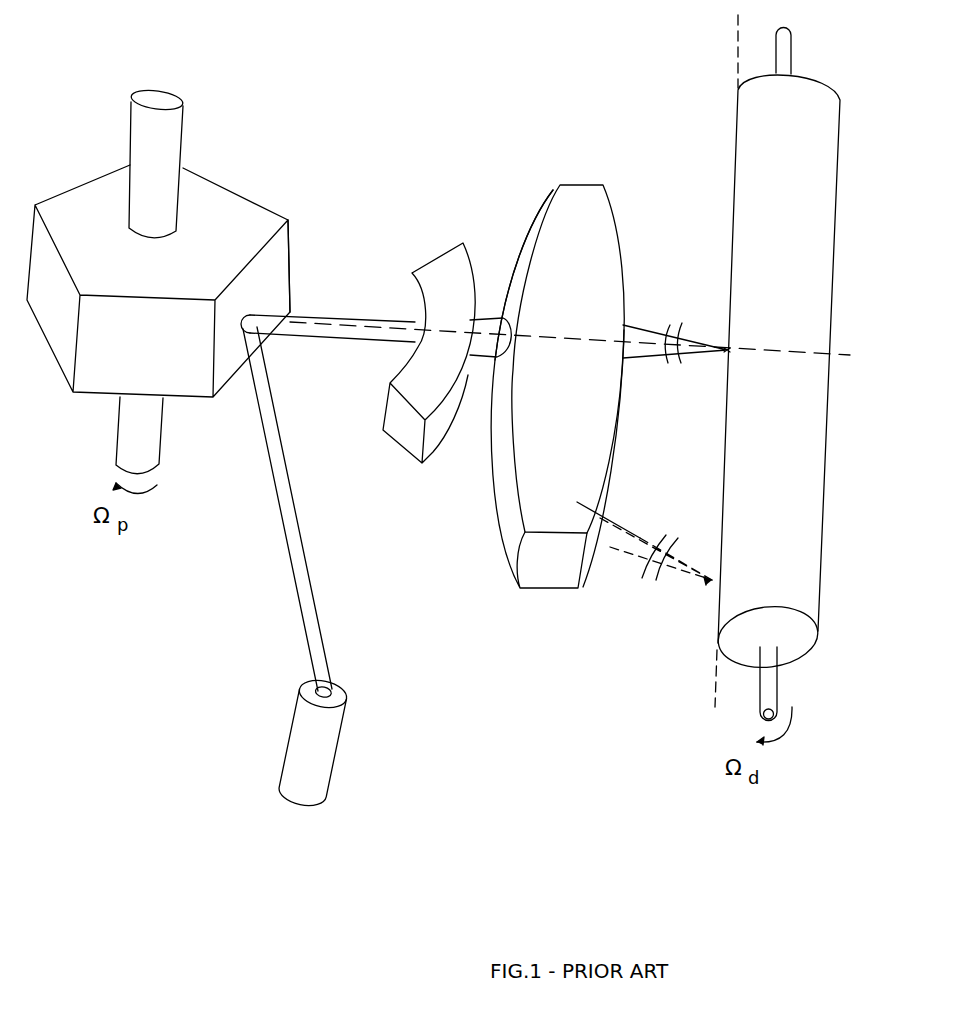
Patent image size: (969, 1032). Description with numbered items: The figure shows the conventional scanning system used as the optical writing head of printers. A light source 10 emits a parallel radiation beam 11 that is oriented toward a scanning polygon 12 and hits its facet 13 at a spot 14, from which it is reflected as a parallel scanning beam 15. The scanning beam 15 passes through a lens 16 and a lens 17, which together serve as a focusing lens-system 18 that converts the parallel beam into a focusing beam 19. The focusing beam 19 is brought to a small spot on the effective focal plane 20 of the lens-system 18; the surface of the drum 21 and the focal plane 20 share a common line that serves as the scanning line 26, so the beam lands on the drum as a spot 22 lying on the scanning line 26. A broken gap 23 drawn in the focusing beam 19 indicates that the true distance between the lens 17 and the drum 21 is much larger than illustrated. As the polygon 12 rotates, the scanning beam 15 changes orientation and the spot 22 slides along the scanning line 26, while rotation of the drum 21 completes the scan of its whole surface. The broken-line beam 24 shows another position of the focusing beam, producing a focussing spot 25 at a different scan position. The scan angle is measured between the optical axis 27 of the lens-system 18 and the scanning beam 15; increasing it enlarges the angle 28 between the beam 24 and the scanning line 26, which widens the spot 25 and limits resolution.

The light source 10 is at (317, 720).
The parallel radiation beam 11 is at (297, 565).
The scanning polygon 12 is at (78, 205).
The facet 13 is at (282, 252).
The spot 14 is at (247, 322).
The parallel scanning beam 15 is at (336, 316).
The lens 16 is at (415, 432).
The lens 17 is at (560, 570).
The focusing lens-system 18 is at (498, 443).
The focusing beam 19 is at (628, 338).
The effective focal plane 20 is at (717, 660).
The drum 21 is at (823, 387).
The spot 22 is at (727, 350).
The broken gap 23 is at (672, 365).
The beam 24 is at (613, 547).
The focussing spot 25 is at (717, 580).
The scanning line 26 is at (737, 77).
The optical axis 27 is at (588, 343).
The angle 28 is at (708, 568).